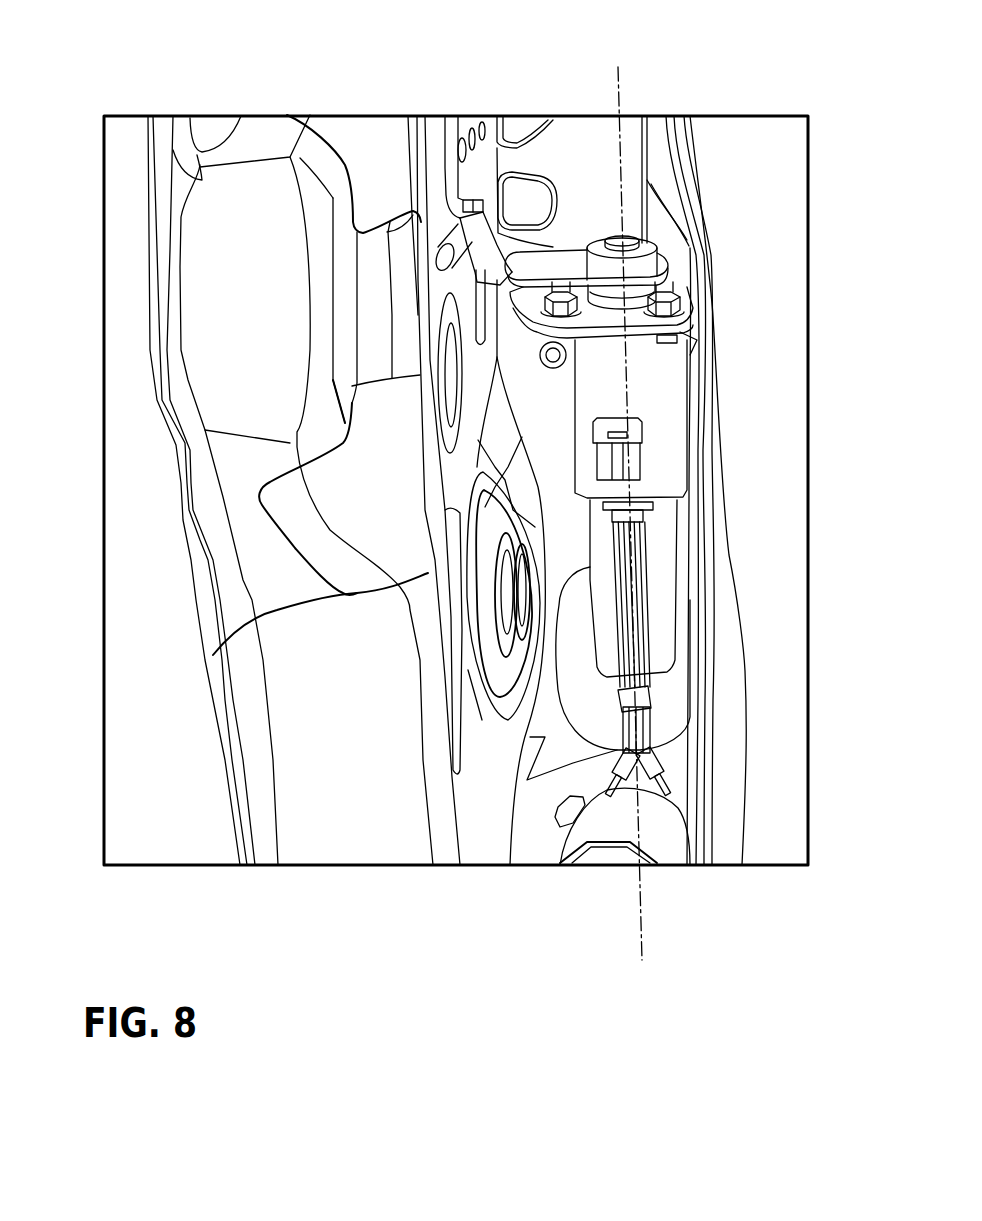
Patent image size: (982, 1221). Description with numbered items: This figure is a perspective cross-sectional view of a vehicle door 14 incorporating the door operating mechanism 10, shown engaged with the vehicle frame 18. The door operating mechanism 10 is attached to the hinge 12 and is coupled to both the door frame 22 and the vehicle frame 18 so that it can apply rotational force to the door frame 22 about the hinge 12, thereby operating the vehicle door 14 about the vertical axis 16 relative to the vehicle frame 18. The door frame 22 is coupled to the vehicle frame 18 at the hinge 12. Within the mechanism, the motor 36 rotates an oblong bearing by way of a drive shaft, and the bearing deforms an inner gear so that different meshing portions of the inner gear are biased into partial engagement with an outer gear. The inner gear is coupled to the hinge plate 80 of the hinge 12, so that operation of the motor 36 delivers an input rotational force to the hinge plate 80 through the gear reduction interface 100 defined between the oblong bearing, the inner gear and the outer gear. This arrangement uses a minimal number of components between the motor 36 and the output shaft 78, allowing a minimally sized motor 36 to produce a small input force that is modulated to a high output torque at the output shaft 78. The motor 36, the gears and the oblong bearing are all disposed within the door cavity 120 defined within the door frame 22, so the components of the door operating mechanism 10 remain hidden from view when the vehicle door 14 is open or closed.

The door operating mechanism 10 is at (786, 488).
The hinge 12 is at (478, 352).
The vehicle door 14 is at (812, 161).
The vertical axis 16 is at (618, 95).
The vehicle frame 18 is at (444, 221).
The door frame 22 is at (708, 623).
The motor 36 is at (655, 578).
The output shaft 78 is at (652, 251).
The hinge plate 80 is at (476, 258).
The gear reduction interface 100 is at (665, 384).
The door cavity 120 is at (683, 703).